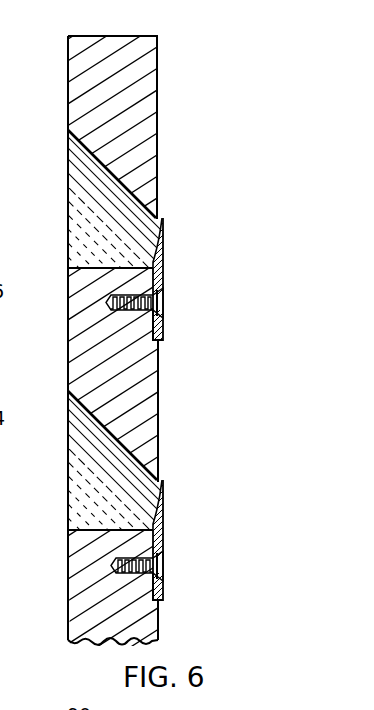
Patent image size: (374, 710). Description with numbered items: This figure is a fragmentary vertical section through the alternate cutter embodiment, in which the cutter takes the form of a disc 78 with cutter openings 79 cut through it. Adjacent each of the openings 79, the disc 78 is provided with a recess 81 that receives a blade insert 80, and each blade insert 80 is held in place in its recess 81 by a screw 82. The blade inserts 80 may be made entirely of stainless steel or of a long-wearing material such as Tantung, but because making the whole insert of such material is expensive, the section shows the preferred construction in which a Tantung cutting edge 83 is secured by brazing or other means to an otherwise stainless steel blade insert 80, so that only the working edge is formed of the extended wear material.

The disc 78 is at (150, 88).
The cutter openings 79 is at (84, 203).
The blade inserts 80 is at (165, 262).
The recesses 81 is at (165, 336).
The screws 82 is at (164, 303).
The Tantung cutting edge 83 is at (165, 233).